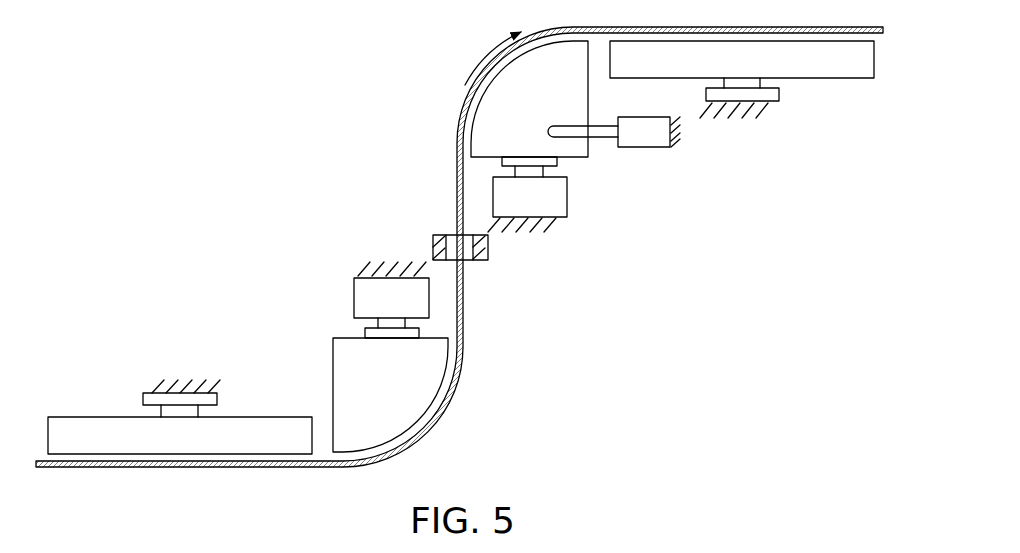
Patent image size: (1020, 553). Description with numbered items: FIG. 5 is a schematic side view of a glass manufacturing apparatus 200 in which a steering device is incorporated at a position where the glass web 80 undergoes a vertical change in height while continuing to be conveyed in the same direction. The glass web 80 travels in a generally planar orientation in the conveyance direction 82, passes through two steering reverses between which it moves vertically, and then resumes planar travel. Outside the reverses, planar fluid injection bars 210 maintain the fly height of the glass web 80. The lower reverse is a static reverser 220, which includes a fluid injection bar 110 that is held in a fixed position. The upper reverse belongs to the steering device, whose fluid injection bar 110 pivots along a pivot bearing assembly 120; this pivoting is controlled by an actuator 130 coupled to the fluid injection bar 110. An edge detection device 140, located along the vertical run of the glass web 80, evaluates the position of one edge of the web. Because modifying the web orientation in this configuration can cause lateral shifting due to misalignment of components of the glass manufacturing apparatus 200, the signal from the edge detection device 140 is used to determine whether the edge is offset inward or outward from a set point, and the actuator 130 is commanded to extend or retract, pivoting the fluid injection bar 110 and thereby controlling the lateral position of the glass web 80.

The glass manufacturing apparatus 200 is at (226, 70).
The glass web 80 is at (190, 468).
The conveyance direction 82 is at (488, 55).
The fluid injection bar 110 is at (600, 156).
The pivot bearing assembly 120 is at (568, 208).
The actuator 130 is at (653, 148).
The edge detection device 140 is at (425, 241).
The planar fluid injection bar 210 is at (102, 416).
The static reverser 220 is at (333, 345).